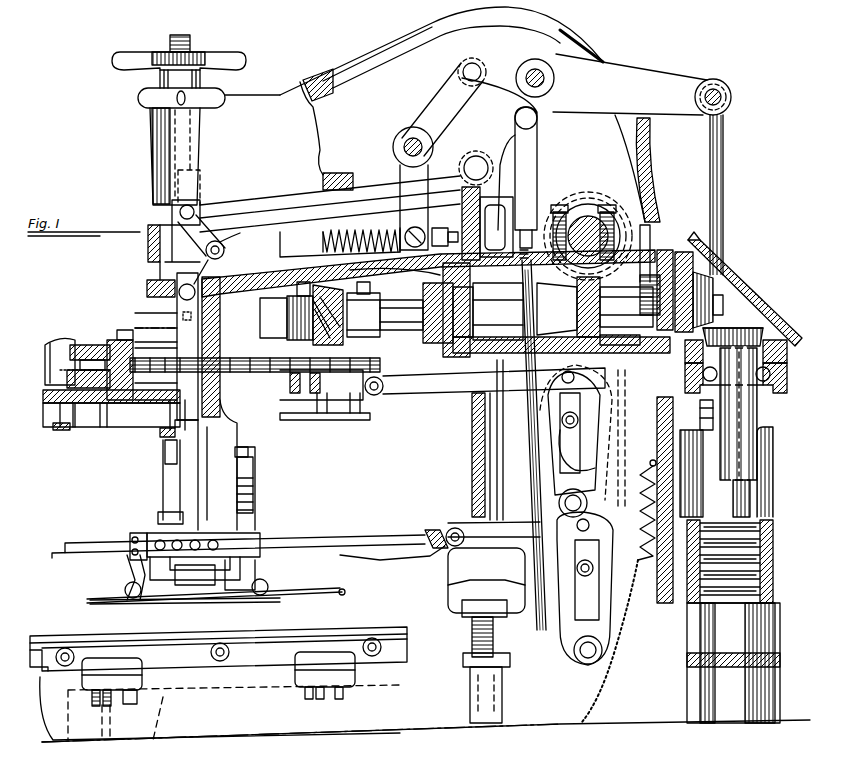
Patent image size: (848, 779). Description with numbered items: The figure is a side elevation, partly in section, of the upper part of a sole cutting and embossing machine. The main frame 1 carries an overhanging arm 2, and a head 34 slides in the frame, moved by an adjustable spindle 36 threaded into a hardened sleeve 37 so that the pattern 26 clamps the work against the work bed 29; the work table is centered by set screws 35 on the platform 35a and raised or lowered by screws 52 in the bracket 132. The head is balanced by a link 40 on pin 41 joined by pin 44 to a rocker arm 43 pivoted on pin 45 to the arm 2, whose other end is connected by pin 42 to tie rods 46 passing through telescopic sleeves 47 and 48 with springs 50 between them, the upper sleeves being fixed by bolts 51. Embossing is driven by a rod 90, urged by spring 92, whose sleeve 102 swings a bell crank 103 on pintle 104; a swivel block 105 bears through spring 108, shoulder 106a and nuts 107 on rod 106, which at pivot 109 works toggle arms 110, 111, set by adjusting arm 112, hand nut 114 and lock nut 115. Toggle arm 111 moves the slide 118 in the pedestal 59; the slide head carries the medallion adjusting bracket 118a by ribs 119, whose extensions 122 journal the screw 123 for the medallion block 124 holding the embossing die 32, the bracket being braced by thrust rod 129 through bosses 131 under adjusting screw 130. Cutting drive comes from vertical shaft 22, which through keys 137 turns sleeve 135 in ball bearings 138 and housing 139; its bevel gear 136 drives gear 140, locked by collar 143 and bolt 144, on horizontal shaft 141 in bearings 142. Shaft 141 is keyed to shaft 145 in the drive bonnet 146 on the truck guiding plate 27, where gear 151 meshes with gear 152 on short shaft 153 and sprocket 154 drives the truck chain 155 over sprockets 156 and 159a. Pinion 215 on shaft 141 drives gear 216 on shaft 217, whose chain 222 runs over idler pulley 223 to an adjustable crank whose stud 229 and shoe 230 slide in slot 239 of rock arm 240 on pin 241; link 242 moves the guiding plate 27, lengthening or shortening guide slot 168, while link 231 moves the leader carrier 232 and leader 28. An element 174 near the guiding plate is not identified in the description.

The main frame 1 is at (656, 580).
The overhanging arm 2 is at (540, 33).
The vertical shaft 22 is at (765, 630).
The pattern 26 is at (350, 588).
The truck guiding plate 27 is at (55, 405).
The leader 28 is at (408, 518).
The work bed 29 is at (375, 632).
The embossing die 32 is at (195, 600).
The head 34 is at (148, 268).
The set screws 35 is at (70, 650).
The platform 35a is at (305, 628).
The adjustable spindle 36 is at (472, 637).
The hardened sleeve 37 is at (462, 615).
The link 40 is at (508, 135).
The pin 41 is at (466, 164).
The pin 42 is at (740, 78).
The rocker arm 43 is at (628, 76).
The pin 44 is at (462, 75).
The pin 45 is at (566, 60).
The tie rods 46 is at (723, 205).
The upper telescopic retaining sleeve 47 is at (768, 462).
The lower spring retaining sleeve 48 is at (775, 690).
The spring 50 is at (770, 548).
The bolts 51 is at (718, 428).
The screws 52 is at (350, 695).
The pedestal 59 is at (152, 300).
The rod 90 is at (540, 420).
The spring 92 is at (618, 685).
The sleeve 102 is at (536, 196).
The bell crank 103 is at (430, 124).
The pintle 104 is at (394, 152).
The swivel block 105 is at (460, 192).
The rod 106 is at (288, 246).
The shoulder 106a is at (344, 234).
The nuts 107 is at (447, 226).
The spring 108 is at (392, 226).
The pivot 109 is at (233, 239).
The toggle arm 110 is at (205, 213).
The toggle arm 111 is at (184, 258).
The adjusting arm 112 is at (190, 160).
The hand nut 114 is at (225, 98).
The nut 115 is at (236, 58).
The embossing slide 118 is at (178, 318).
The medallion adjusting bracket 118a is at (133, 583).
The ribs 119 is at (234, 572).
The extensions 122 is at (233, 592).
The medallion block adjusting screw 123 is at (170, 590).
The medallion block 124 is at (185, 595).
The thrust rod 129 is at (165, 500).
The adjusting screw 130 is at (158, 434).
The bosses 131 is at (162, 452).
The bracket 132 is at (410, 738).
The sleeve 135 is at (760, 440).
The bevel gear 136 is at (770, 320).
The keys 137 is at (750, 498).
The ball bearings 138 is at (797, 370).
The housing 139 is at (797, 352).
The companion gear 140 is at (700, 283).
The upper horizontal shaft 141 is at (633, 305).
The bearings 142 is at (458, 283).
The collar 143 is at (730, 248).
The bolt 144 is at (723, 300).
The shaft 145 is at (410, 326).
The drive bonnet 146 is at (55, 350).
The gear 151 is at (400, 276).
The gear 152 is at (275, 348).
The short shaft 153 is at (288, 420).
The sprocket 154 is at (360, 350).
The truck driving chain 155 is at (156, 336).
The sprocket 156 is at (365, 362).
The sprocket 159a is at (85, 340).
The guide slot 168 is at (80, 428).
The support 174 is at (62, 430).
The pinion 215 is at (632, 337).
The gear 216 is at (600, 206).
The shaft 217 is at (616, 220).
The chain 222 is at (640, 388).
The idler tension pulley 223 is at (494, 381).
The stud 229 is at (580, 468).
The shoe 230 is at (578, 418).
The link 231 is at (455, 527).
The leader carrier 232 is at (445, 552).
The slot 239 is at (585, 450).
The rock arm 240 is at (600, 360).
The pin 241 is at (585, 500).
The link 242 is at (460, 390).